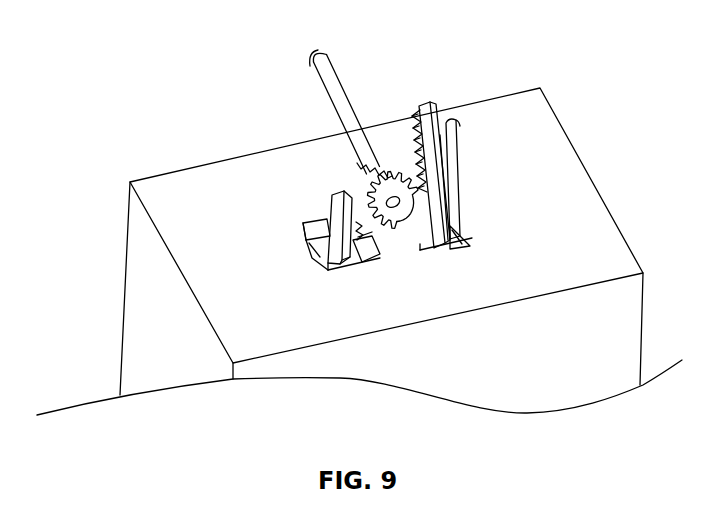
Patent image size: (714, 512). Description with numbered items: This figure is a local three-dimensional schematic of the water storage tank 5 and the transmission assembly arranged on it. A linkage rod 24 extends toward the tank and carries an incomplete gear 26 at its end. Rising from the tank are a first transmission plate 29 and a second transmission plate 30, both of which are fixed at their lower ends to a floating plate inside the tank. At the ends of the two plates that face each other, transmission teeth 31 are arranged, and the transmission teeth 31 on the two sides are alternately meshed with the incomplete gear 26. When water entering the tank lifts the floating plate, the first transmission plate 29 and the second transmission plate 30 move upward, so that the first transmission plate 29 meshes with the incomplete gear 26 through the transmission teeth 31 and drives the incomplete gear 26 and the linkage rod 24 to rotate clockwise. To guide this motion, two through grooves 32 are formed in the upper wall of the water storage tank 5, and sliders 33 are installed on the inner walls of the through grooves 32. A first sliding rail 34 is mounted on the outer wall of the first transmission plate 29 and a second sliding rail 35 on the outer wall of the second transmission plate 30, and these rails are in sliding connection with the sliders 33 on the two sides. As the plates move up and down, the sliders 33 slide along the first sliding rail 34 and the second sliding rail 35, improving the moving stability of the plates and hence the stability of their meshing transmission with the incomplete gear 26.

The water storage tank 5 is at (582, 217).
The linkage rod 24 is at (337, 107).
The incomplete gear 26 is at (384, 212).
The first transmission plate 29 is at (361, 241).
The second transmission plate 30 is at (428, 106).
The transmission teeth 31 is at (424, 127).
The through grooves 32 is at (316, 226).
The sliders 33 is at (460, 234).
The first sliding rail 34 is at (325, 262).
The second sliding rail 35 is at (457, 127).